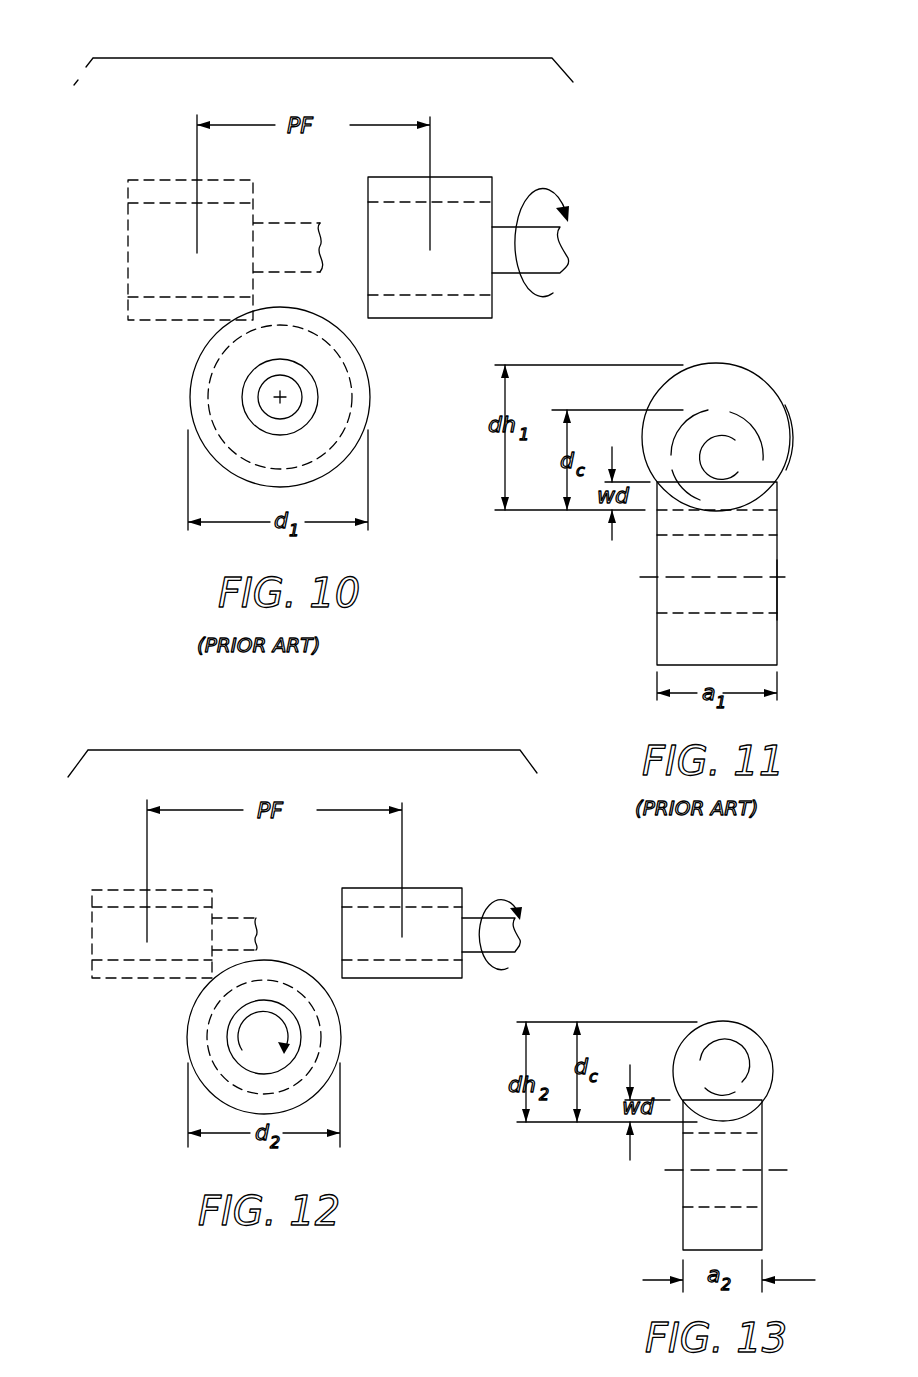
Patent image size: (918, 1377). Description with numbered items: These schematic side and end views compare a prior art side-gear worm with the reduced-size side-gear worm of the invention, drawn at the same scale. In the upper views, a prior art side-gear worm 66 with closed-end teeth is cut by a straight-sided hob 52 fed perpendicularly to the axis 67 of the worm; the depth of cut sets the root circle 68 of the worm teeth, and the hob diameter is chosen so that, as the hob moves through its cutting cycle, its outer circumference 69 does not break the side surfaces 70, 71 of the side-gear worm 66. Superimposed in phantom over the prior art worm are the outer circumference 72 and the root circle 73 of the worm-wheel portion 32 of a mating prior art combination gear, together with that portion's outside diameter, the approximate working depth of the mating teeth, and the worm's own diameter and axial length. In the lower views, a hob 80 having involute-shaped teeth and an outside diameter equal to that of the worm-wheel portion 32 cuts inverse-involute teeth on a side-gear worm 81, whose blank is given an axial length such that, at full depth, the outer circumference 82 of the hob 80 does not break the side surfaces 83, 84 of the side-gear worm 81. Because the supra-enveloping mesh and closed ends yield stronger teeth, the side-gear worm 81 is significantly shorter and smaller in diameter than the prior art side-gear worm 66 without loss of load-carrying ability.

In FIG. 11, the worm-wheel portion 32 is at (717, 423).
In FIG. 10, the straight-sided hob 52 is at (163, 229).
In FIG. 11, the straight-sided hob 52 is at (745, 386).
In FIG. 10, the side-gear worm 66 is at (198, 375).
In FIG. 11, the side-gear worm 66 is at (676, 605).
In FIG. 10, the axis 67 is at (280, 400).
In FIG. 11, the axis 67 is at (657, 577).
In FIG. 10, the root circle 68 is at (352, 392).
In FIG. 11, the root circle 68 is at (748, 510).
In FIG. 11, the outer circumference 69 is at (790, 425).
In FIG. 11, the side surface 70 is at (657, 522).
In FIG. 11, the side surface 71 is at (777, 588).
In FIG. 11, the outer circumference 72 is at (752, 422).
In FIG. 11, the root circle 73 is at (737, 472).
In FIG. 12, the hob 80 is at (192, 898).
In FIG. 13, the hob 80 is at (738, 1033).
In FIG. 12, the side-gear worm 81 is at (198, 1022).
In FIG. 13, the side-gear worm 81 is at (762, 1153).
In FIG. 13, the outer circumference 82 is at (766, 1042).
In FIG. 13, the side surface 83 is at (683, 1143).
In FIG. 13, the side surface 84 is at (762, 1178).